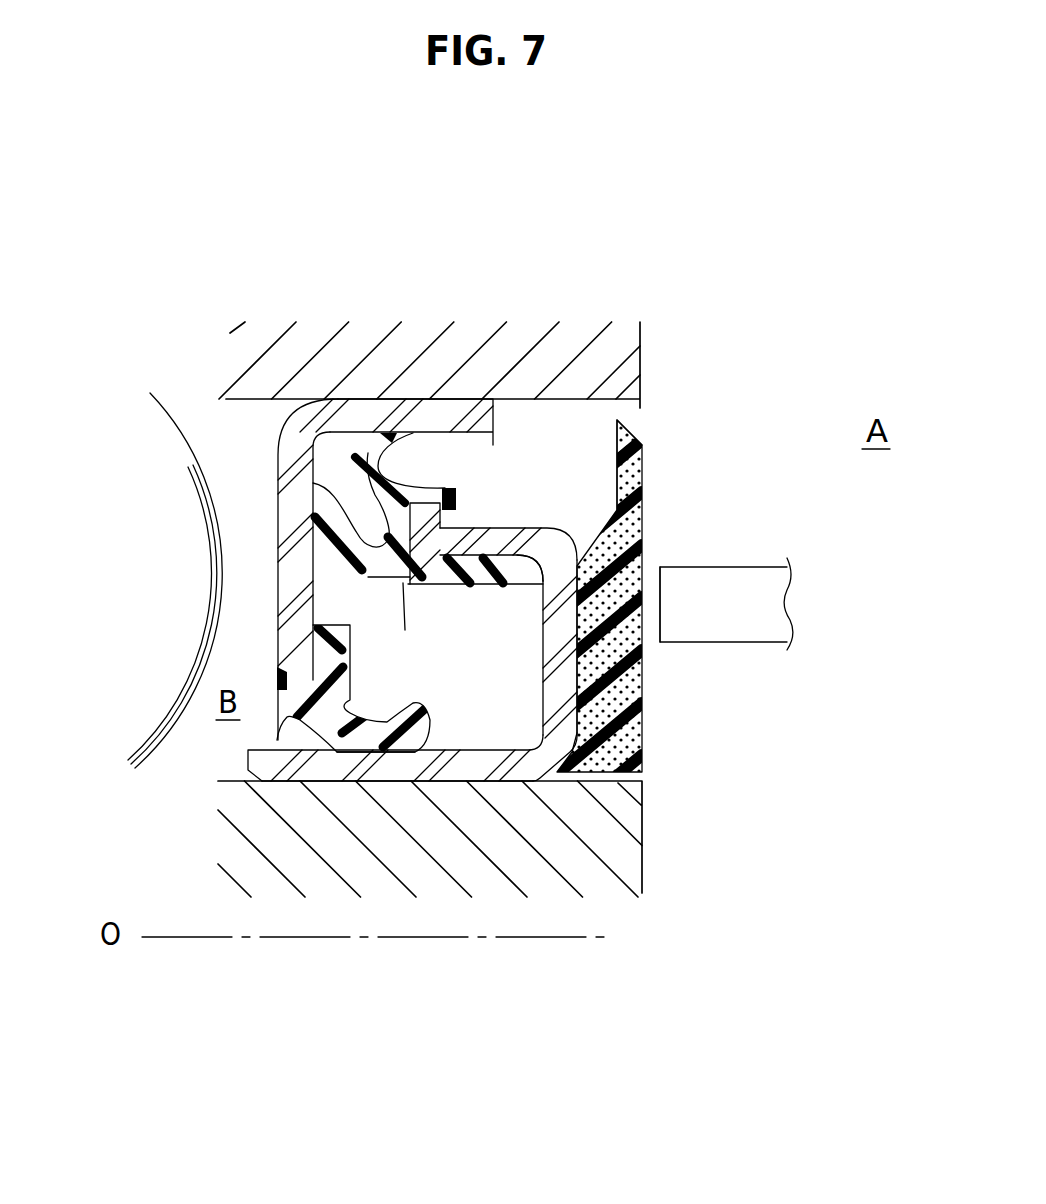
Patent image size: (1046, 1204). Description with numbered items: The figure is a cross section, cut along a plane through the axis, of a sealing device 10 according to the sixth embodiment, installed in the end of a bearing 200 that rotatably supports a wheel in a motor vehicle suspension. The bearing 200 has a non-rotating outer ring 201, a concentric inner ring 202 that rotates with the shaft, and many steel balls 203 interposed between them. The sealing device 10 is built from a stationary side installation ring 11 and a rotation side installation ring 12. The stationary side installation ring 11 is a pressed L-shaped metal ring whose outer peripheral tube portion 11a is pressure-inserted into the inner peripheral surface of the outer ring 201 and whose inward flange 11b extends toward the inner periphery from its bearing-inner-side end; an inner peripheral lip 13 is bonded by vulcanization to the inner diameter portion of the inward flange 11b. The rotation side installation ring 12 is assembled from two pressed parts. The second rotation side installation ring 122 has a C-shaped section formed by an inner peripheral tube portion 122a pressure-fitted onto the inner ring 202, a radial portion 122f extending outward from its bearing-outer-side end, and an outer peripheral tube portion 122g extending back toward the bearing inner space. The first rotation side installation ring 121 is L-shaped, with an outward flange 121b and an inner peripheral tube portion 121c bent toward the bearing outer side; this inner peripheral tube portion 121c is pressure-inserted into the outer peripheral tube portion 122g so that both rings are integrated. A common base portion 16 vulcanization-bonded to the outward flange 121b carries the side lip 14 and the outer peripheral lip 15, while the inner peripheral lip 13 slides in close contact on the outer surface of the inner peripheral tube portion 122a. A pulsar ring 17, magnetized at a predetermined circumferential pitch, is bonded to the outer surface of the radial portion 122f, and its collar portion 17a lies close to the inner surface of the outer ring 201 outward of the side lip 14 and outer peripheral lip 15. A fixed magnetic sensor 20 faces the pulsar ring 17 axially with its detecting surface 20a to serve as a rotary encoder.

The sealing device 10 is at (414, 612).
The stationary side installation ring 11 is at (278, 470).
The outer peripheral tube portion 11a is at (440, 410).
The inward flange 11b is at (292, 541).
The rotation side installation ring 12 is at (512, 792).
The inner peripheral lip 13 is at (380, 745).
The side lip 14 is at (313, 485).
The outer peripheral lip 15 is at (353, 530).
The common base portion 16 is at (392, 585).
The pulsar ring 17 is at (635, 622).
The collar portion 17a is at (645, 425).
The magnetic sensor 20 is at (767, 579).
The detecting surface 20a is at (662, 585).
The first rotation side installation ring 121 is at (483, 557).
The outward flange 121b is at (425, 510).
The inner peripheral tube portion 121c is at (526, 562).
The second rotation side installation ring 122 is at (498, 738).
The inner peripheral tube portion 122a is at (320, 772).
The radial portion 122f is at (580, 600).
The outer peripheral tube portion 122g is at (490, 548).
The bearing 200 is at (434, 583).
The outer ring 201 is at (555, 350).
The inner ring 202 is at (425, 870).
The steel balls 203 is at (166, 758).